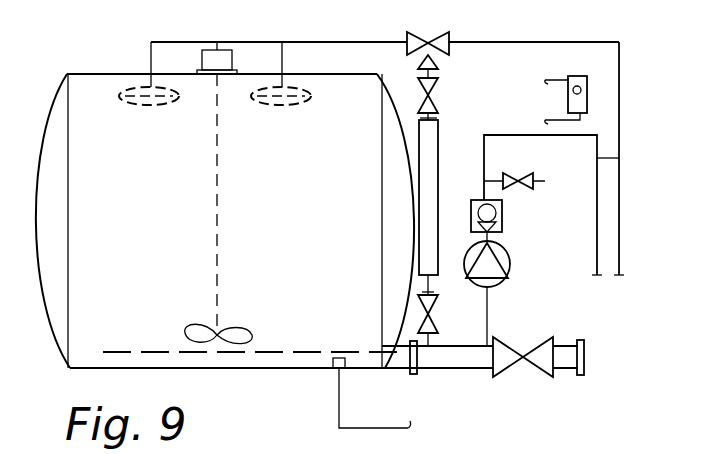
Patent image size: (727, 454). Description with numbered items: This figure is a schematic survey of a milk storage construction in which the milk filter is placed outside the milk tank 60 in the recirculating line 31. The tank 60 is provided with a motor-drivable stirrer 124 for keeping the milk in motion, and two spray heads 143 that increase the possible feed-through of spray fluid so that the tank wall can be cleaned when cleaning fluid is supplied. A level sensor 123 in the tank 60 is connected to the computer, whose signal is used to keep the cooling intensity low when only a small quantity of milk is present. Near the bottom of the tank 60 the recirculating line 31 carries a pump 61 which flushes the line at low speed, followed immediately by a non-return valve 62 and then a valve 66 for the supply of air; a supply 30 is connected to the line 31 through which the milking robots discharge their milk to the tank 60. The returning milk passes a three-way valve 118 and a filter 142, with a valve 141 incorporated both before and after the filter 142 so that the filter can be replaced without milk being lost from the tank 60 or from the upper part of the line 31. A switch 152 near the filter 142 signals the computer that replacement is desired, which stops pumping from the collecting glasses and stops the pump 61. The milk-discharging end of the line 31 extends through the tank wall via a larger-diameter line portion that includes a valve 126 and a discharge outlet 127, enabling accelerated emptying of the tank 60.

The milk tank 60 is at (98, 74).
The motor-drivable stirrer 124 is at (222, 50).
The spray heads 143 is at (149, 106).
The three-way valve 118 is at (449, 37).
The valve 141 is at (438, 88).
The filter 142 is at (440, 130).
The switch 152 is at (576, 76).
The recirculating line 31 is at (620, 93).
The supply 30 is at (597, 238).
The air supply valve 66 is at (533, 184).
The non-return valve 62 is at (504, 225).
The pump 61 is at (511, 268).
The valve 126 is at (540, 380).
The discharge outlet 127 is at (562, 345).
The level sensor 123 is at (331, 370).